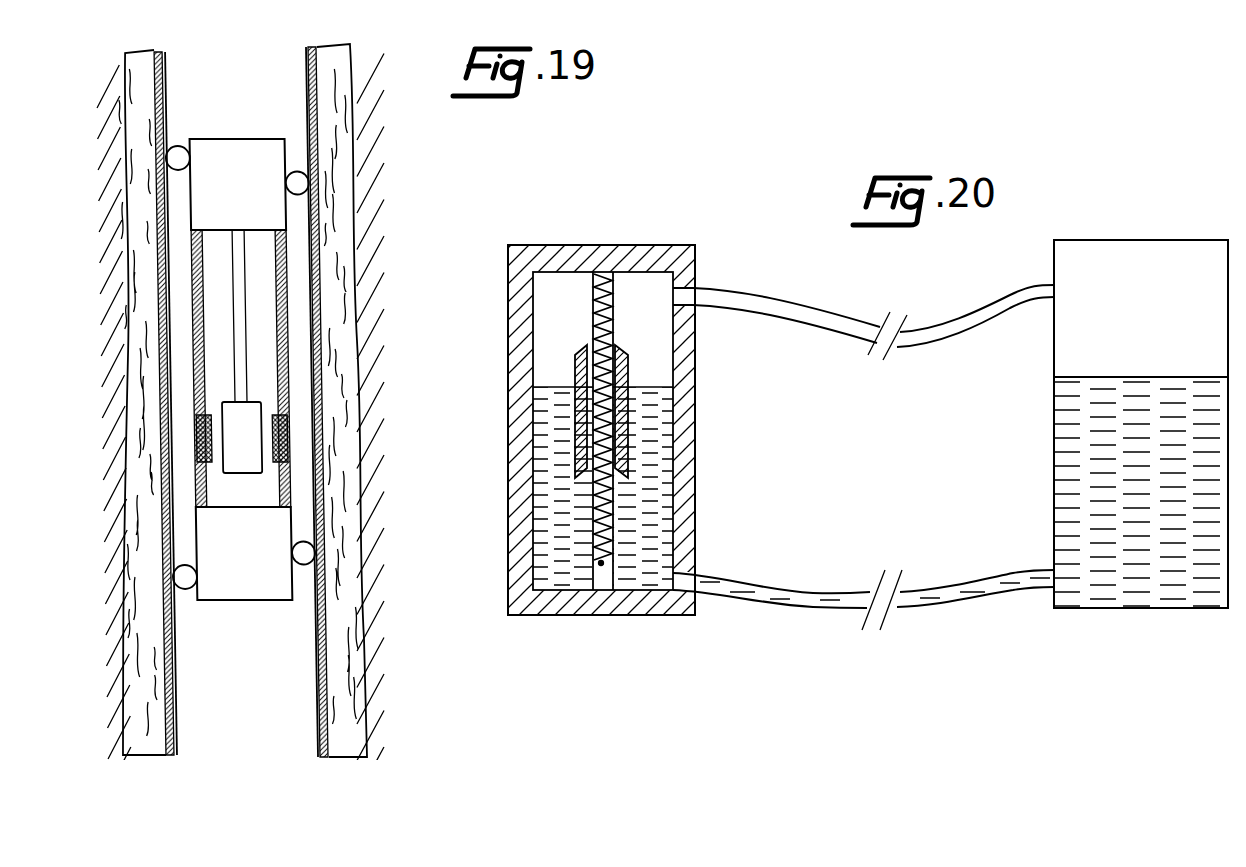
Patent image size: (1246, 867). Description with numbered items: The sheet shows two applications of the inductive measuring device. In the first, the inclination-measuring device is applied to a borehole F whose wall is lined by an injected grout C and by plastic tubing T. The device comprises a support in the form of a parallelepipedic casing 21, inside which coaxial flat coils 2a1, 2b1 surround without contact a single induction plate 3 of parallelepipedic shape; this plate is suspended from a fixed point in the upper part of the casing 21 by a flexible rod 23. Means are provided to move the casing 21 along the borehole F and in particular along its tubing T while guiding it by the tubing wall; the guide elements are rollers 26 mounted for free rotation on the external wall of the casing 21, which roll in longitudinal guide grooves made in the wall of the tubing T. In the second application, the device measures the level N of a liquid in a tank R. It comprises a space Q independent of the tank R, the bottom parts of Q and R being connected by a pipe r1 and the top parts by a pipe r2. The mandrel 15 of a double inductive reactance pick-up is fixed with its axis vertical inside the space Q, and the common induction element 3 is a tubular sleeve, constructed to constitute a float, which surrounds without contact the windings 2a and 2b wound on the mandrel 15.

In FIG. 19, the borehole F is at (317, 108).
In FIG. 19, the injected grout C is at (340, 122).
In FIG. 19, the plastic tubing T is at (320, 143).
In FIG. 19, the rollers 26 is at (303, 185).
In FIG. 19, the casing 21 is at (287, 221).
In FIG. 19, the flexible rod 23 is at (243, 270).
In FIG. 19, the induction plate 3 is at (243, 468).
In FIG. 20, the induction plate 3 is at (623, 355).
In FIG. 19, the flat coil 2b1 is at (206, 450).
In FIG. 19, the flat coil 2a1 is at (284, 450).
In FIG. 20, the winding 2a is at (590, 318).
In FIG. 20, the winding 2b is at (597, 545).
In FIG. 20, the mandrel 15 is at (607, 582).
In FIG. 20, the space Q is at (685, 412).
In FIG. 20, the pipe r1 is at (785, 610).
In FIG. 20, the pipe r2 is at (797, 313).
In FIG. 20, the tank R is at (1163, 240).
In FIG. 20, the level N is at (1133, 377).